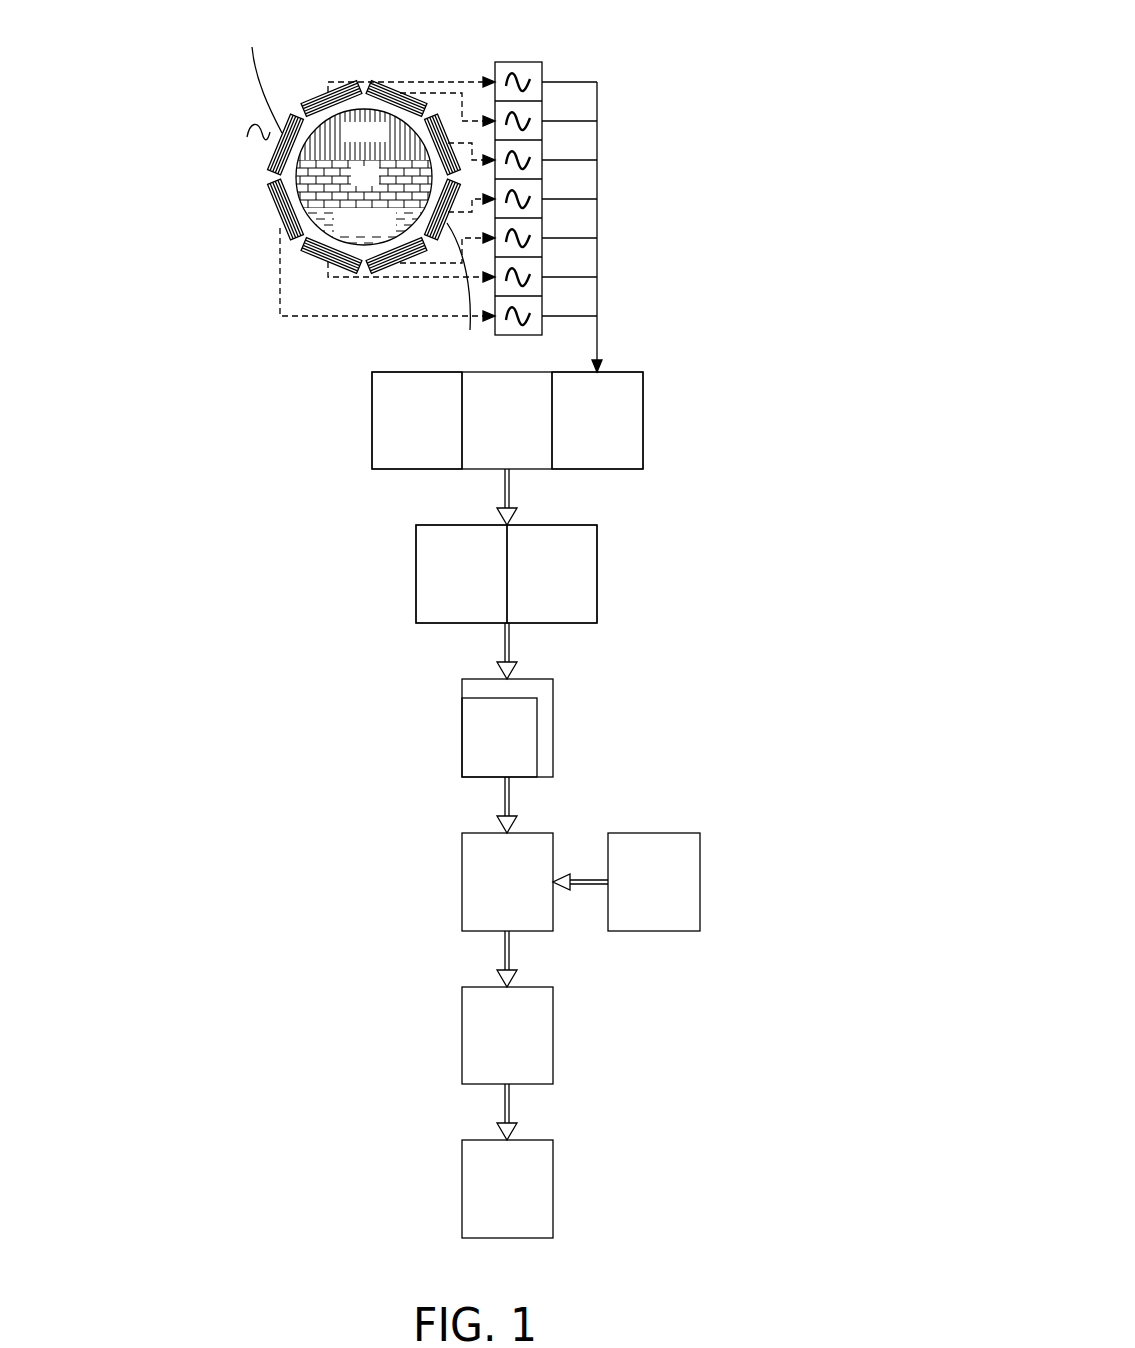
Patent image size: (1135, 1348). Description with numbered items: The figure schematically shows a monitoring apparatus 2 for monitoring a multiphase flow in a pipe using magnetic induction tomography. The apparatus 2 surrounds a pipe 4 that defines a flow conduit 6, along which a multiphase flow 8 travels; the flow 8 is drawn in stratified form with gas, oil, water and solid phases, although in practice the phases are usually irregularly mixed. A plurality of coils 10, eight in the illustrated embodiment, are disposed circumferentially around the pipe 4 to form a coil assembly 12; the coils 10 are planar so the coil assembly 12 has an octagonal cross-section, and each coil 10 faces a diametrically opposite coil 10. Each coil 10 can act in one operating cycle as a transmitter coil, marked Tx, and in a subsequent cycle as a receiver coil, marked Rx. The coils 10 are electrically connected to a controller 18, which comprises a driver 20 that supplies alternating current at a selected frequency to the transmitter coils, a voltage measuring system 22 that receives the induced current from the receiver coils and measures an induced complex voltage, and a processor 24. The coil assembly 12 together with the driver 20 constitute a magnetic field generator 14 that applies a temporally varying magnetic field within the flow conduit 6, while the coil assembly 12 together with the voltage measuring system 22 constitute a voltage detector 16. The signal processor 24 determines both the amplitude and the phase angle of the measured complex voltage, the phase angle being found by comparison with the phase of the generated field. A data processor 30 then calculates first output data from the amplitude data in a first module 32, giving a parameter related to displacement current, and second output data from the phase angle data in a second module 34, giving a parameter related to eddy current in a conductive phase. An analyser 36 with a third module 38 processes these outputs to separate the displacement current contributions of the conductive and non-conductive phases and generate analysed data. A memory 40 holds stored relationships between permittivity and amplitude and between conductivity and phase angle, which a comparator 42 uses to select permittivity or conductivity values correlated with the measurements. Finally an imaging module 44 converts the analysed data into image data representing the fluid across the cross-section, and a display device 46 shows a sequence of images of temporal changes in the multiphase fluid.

The monitoring apparatus 2 is at (735, 30).
The pipe 4 is at (317, 117).
The flow conduit 6 is at (358, 103).
The multiphase flow 8 is at (407, 167).
The coil 10 is at (275, 153).
The coil assembly 12 is at (387, 97).
The magnetic field generator 14 is at (501, 430).
The voltage detector 16 is at (543, 423).
The controller 18 is at (615, 372).
The driver 20 is at (385, 392).
The voltage measuring system 22 is at (467, 438).
The signal processor 24 is at (620, 393).
The data processor 30 is at (513, 569).
The first module 32 is at (423, 550).
The second module 34 is at (578, 577).
The analyser 36 is at (511, 728).
The third module 38 is at (470, 738).
The memory 40 is at (685, 880).
The comparator 42 is at (472, 880).
The imaging module 44 is at (555, 1035).
The display device 46 is at (555, 1188).